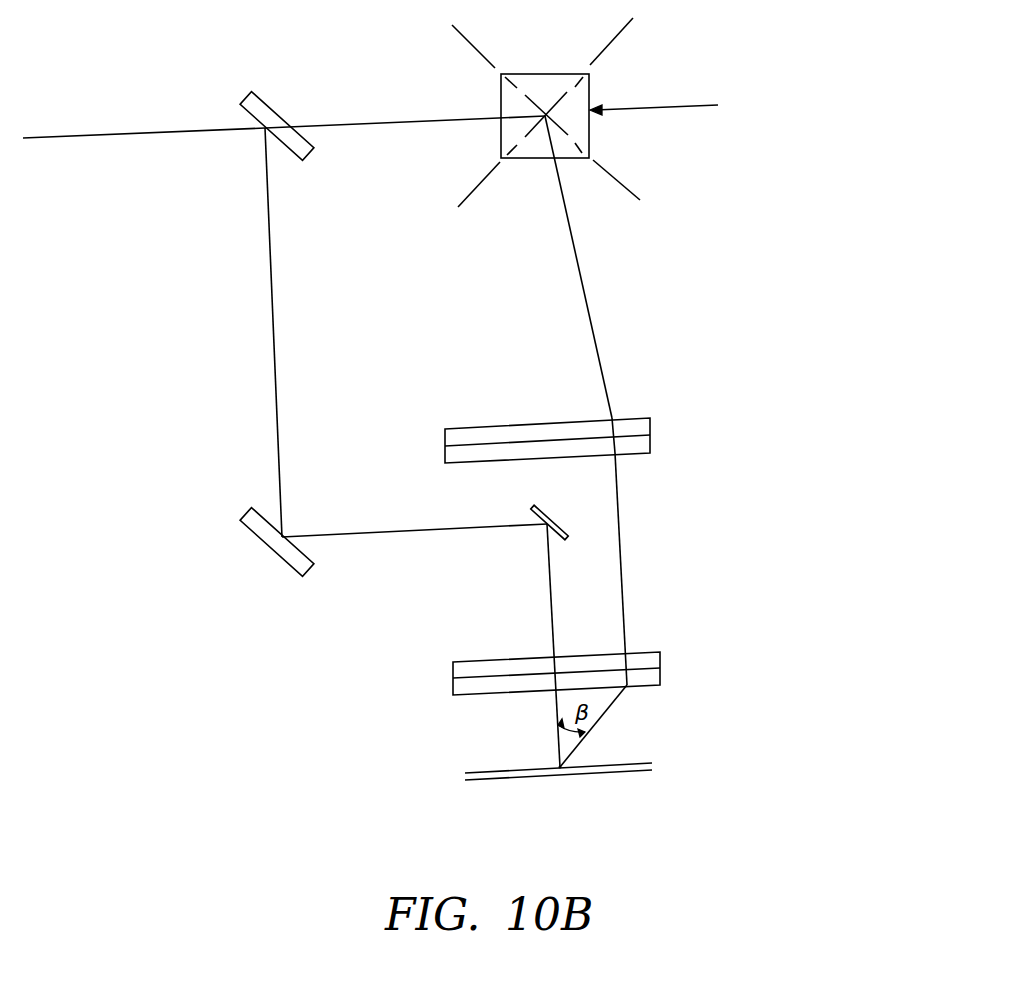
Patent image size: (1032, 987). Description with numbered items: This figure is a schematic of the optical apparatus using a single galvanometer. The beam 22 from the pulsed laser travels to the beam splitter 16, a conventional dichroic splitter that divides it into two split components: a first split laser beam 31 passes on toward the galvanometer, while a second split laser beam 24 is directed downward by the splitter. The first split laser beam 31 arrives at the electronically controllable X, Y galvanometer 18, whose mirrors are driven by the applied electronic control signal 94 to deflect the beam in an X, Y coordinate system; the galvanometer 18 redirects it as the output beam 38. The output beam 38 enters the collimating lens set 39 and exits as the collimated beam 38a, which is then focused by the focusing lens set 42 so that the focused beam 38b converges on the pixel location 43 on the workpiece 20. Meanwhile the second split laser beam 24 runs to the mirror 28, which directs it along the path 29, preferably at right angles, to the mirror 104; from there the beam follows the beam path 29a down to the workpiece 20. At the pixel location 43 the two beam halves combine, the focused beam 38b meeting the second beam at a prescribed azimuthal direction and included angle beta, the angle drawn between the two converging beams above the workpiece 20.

The beam 22 is at (92, 133).
The first split laser beam 31 is at (418, 118).
The beam splitter 16 is at (307, 157).
The second split laser beam 24 is at (275, 332).
The X, Y galvanometer 18 is at (589, 85).
The electronic control signal 94 is at (677, 108).
The output beam 38 is at (583, 268).
The collimating lens set 39 is at (650, 436).
The collimated beam 38a is at (623, 543).
The mirror 28 is at (287, 570).
The path 29 is at (363, 537).
The mirror 104 is at (537, 510).
The beam path 29a is at (550, 583).
The focusing lens set 42 is at (660, 662).
The focused beam 38b is at (617, 698).
The pixel location 43 is at (567, 767).
The workpiece 20 is at (477, 782).